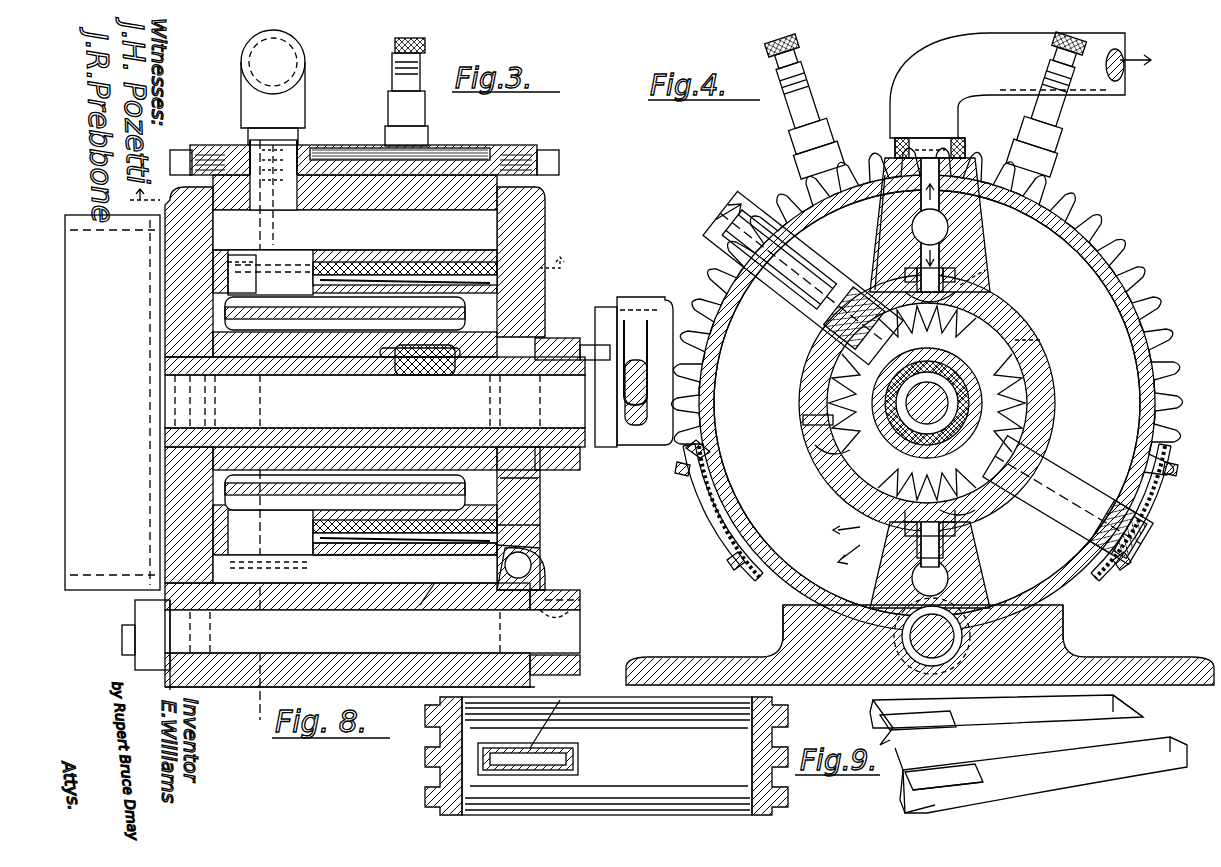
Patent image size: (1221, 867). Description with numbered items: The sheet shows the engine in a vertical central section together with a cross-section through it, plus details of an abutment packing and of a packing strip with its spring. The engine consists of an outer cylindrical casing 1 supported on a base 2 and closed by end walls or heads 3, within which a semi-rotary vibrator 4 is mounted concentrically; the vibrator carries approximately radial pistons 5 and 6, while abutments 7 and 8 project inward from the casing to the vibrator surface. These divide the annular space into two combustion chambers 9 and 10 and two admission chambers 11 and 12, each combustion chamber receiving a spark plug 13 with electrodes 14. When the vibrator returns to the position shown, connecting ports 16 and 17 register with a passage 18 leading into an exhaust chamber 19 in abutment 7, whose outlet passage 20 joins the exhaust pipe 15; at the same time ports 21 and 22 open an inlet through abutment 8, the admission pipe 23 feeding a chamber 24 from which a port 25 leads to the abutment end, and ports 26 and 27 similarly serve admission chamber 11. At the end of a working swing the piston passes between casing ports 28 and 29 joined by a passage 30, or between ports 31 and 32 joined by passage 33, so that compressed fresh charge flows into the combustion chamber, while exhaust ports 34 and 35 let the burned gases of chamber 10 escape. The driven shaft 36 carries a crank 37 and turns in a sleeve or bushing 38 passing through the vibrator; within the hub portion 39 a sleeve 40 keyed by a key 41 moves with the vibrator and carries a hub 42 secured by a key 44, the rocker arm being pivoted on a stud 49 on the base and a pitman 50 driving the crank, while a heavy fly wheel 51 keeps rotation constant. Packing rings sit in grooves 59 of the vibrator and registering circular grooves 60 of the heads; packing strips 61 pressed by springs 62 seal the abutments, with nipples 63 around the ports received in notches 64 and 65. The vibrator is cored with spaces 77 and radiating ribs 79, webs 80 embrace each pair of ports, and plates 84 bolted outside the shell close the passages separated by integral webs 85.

In FIG. 3, the outer cylindrical casing 1 is at (470, 160).
In FIG. 4, the outer cylindrical casing 1 is at (1118, 255).
In FIG. 3, the base 2 is at (235, 683).
In FIG. 4, the base 2 is at (1135, 660).
In FIG. 3, the end wall or head 3 is at (180, 200).
In FIG. 3, the vibrator 4 is at (290, 368).
In FIG. 4, the vibrator 4 is at (1010, 330).
In FIG. 4, the piston 5 is at (1080, 470).
In FIG. 4, the piston 6 is at (790, 300).
In FIG. 3, the abutment 7 is at (468, 262).
In FIG. 4, the abutment 7 is at (960, 233).
In FIG. 3, the abutment 8 is at (349, 412).
In FIG. 4, the abutment 8 is at (985, 568).
In FIG. 4, the combustion chamber 9 is at (927, 403).
In FIG. 4, the combustion chamber 10 is at (849, 250).
In FIG. 4, the admission chamber 11 is at (923, 590).
In FIG. 4, the admission chamber 12 is at (768, 478).
In FIG. 3, the spark plug 13 is at (425, 115).
In FIG. 4, the spark plug 13 is at (810, 108).
In FIG. 4, the electrodes 14 is at (870, 222).
In FIG. 3, the exhaust pipe 15 is at (300, 45).
In FIG. 4, the exhaust pipe 15 is at (1010, 80).
In FIG. 4, the connecting port 16 is at (984, 270).
In FIG. 4, the connecting port 17 is at (905, 283).
In FIG. 3, the passage 18 is at (262, 262).
In FIG. 4, the passage 18 is at (910, 265).
In FIG. 3, the exhaust chamber 19 is at (355, 230).
In FIG. 4, the exhaust chamber 19 is at (893, 225).
In FIG. 3, the outlet passage 20 is at (273, 192).
In FIG. 4, the outlet passage 20 is at (893, 140).
In FIG. 4, the port 21 is at (965, 512).
In FIG. 4, the port 22 is at (890, 525).
In FIG. 3, the admission pipe 23 is at (531, 565).
In FIG. 3, the chamber 24 is at (405, 561).
In FIG. 4, the chamber 24 is at (905, 580).
In FIG. 3, the port 25 is at (300, 545).
In FIG. 4, the port 25 is at (915, 560).
In FIG. 8, the port 25 is at (549, 713).
In FIG. 4, the port 26 is at (803, 422).
In FIG. 4, the port 27 is at (815, 452).
In FIG. 4, the port 28 is at (1110, 548).
In FIG. 4, the port 29 is at (1120, 470).
In FIG. 4, the passage 30 is at (1150, 500).
In FIG. 4, the port 31 is at (750, 565).
In FIG. 4, the port 32 is at (705, 468).
In FIG. 4, the passage 33 is at (715, 505).
In FIG. 4, the exhaust port 34 is at (1046, 328).
In FIG. 4, the exhaust port 35 is at (1040, 375).
In FIG. 3, the shaft 36 is at (545, 338).
In FIG. 4, the shaft 36 is at (967, 406).
In FIG. 3, the crank 37 is at (612, 300).
In FIG. 3, the sleeve or bushing 38 is at (365, 447).
In FIG. 3, the hub portion 39 is at (450, 335).
In FIG. 4, the hub portion 39 is at (835, 378).
In FIG. 3, the sleeve 40 is at (345, 375).
In FIG. 4, the sleeve 40 is at (965, 300).
In FIG. 3, the key 41 is at (435, 375).
In FIG. 3, the hub 42 is at (555, 455).
In FIG. 3, the key 44 is at (575, 345).
In FIG. 3, the stud 49 is at (575, 630).
In FIG. 4, the stud 49 is at (970, 635).
In FIG. 3, the connecting rod or pitman 50 is at (637, 425).
In FIG. 3, the fly wheel or balance wheel 51 is at (115, 575).
In FIG. 3, the grooves 59 is at (545, 537).
In FIG. 3, the circular grooves 60 is at (545, 513).
In FIG. 3, the packing strips 61 is at (430, 268).
In FIG. 8, the packing strips 61 is at (580, 720).
In FIG. 9, the packing strips 61 is at (1100, 775).
In FIG. 3, the springs 62 is at (395, 262).
In FIG. 8, the springs 62 is at (553, 759).
In FIG. 9, the springs 62 is at (1045, 722).
In FIG. 3, the nipples or flanges 63 is at (300, 262).
In FIG. 8, the nipples or flanges 63 is at (475, 760).
In FIG. 9, the notch 64 is at (960, 765).
In FIG. 8, the notch 65 is at (440, 750).
In FIG. 9, the notch 65 is at (905, 715).
In FIG. 4, the spaces 77 is at (1040, 408).
In FIG. 4, the radiating points or ribs 79 is at (1040, 438).
In FIG. 4, the webs 80 is at (922, 316).
In FIG. 4, the plates 84 is at (725, 550).
In FIG. 4, the webs 85 is at (735, 510).